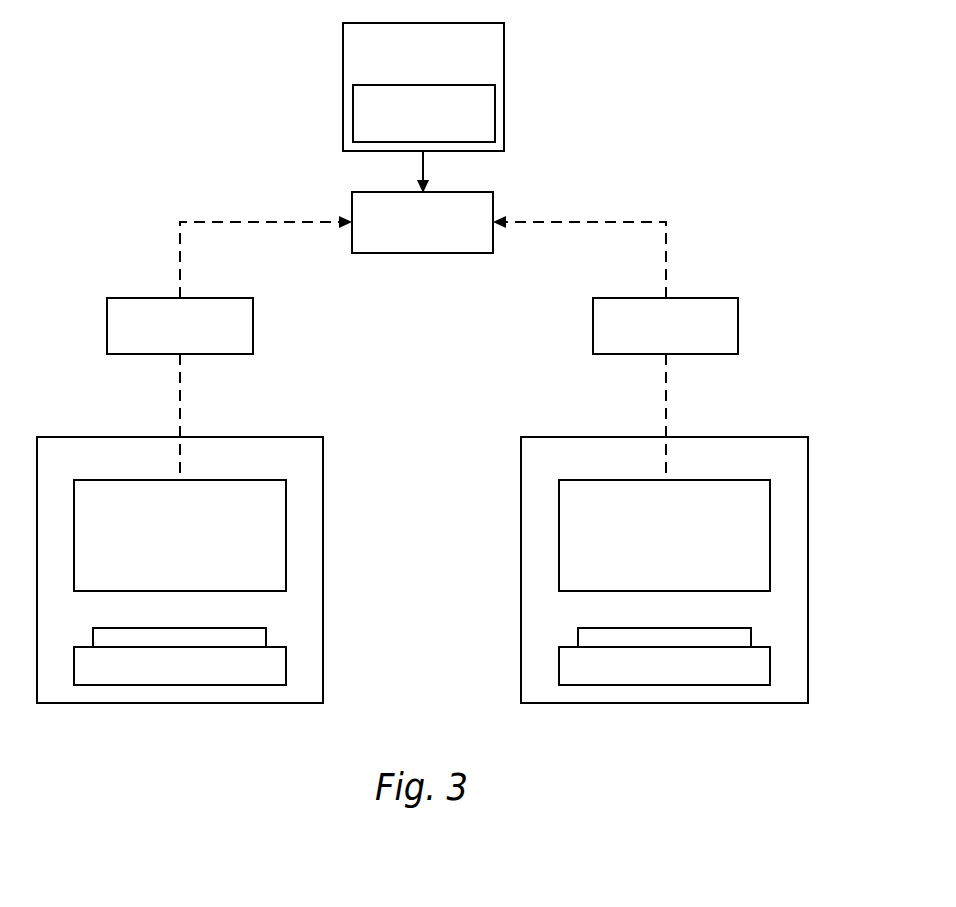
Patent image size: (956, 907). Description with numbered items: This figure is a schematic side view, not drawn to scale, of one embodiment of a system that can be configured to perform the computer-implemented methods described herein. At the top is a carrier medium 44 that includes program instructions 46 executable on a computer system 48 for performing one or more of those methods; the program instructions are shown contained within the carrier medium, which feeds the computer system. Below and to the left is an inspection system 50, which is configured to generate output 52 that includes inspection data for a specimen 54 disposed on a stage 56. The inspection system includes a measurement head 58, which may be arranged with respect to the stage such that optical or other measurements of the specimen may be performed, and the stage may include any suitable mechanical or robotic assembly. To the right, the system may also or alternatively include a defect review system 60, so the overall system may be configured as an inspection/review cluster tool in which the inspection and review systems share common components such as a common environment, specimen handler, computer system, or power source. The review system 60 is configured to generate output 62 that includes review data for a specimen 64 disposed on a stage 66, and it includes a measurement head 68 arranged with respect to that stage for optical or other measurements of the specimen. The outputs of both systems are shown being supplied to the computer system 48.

The carrier medium 44 is at (504, 48).
The program instructions 46 is at (495, 113).
The computer system 48 is at (493, 203).
The inspection system 50 is at (323, 468).
The output 52 is at (253, 327).
The specimen 54 is at (238, 628).
The stage 56 is at (232, 679).
The measurement head 58 is at (165, 544).
The defect review system 60 is at (808, 492).
The output 62 is at (738, 318).
The specimen 64 is at (723, 628).
The stage 66 is at (717, 679).
The measurement head 68 is at (656, 544).